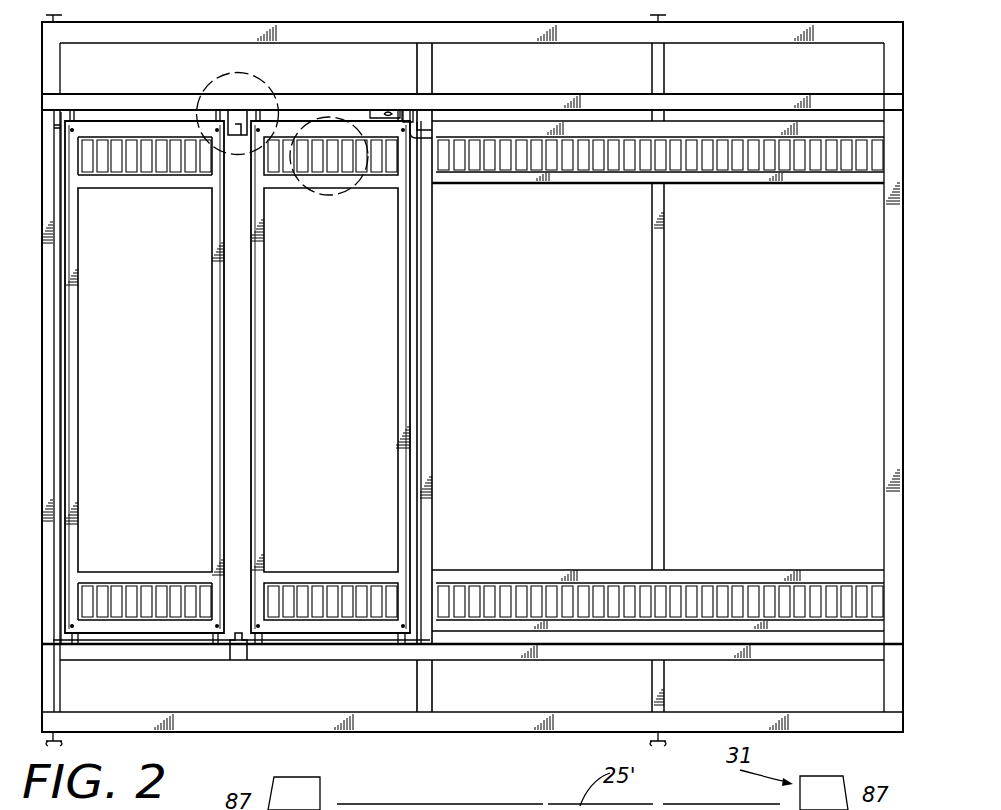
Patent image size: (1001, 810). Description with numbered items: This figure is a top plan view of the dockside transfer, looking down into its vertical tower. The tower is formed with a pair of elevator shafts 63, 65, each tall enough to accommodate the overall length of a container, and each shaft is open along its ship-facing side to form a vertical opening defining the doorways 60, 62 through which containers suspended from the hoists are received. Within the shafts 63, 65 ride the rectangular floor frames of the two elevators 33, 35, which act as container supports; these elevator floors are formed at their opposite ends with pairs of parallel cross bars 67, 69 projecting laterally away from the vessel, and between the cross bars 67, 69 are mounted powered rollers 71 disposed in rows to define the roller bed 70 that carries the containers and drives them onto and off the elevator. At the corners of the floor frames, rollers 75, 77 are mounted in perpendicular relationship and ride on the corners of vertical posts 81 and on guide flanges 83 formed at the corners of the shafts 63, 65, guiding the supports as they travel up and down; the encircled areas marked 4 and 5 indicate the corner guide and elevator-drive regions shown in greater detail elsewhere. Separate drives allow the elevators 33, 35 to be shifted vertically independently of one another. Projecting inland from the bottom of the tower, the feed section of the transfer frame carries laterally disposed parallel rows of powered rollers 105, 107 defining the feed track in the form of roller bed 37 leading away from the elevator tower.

The elevator 33 is at (56, 517).
The elevator 35 is at (415, 350).
The roller bed 37 is at (658, 181).
The doorway 60 is at (47, 355).
The doorway 62 is at (232, 340).
The elevator shaft 63 is at (96, 118).
The elevator shaft 65 is at (421, 378).
The cross bar 67 is at (143, 121).
The cross bar 69 is at (130, 636).
The roller bed 70 is at (192, 175).
The powered roller 71 is at (157, 165).
The roller 75 is at (376, 112).
The roller 77 is at (432, 136).
The vertical post 81 is at (388, 113).
The guide flange 83 is at (412, 110).
The powered roller 105 is at (530, 165).
The powered roller 107 is at (547, 592).
The detail area shown in FIG. 4 is at (284, 90).
The detail area shown in FIG. 5 is at (334, 205).